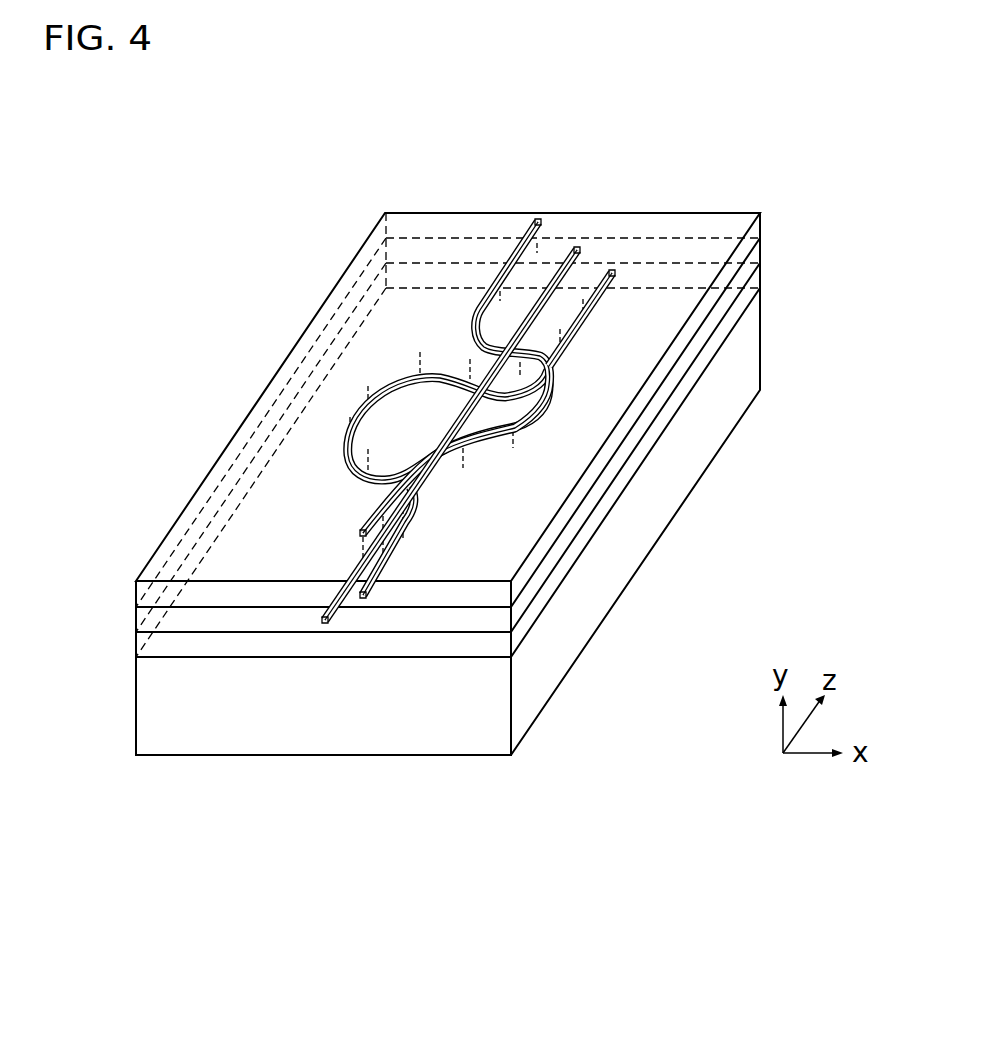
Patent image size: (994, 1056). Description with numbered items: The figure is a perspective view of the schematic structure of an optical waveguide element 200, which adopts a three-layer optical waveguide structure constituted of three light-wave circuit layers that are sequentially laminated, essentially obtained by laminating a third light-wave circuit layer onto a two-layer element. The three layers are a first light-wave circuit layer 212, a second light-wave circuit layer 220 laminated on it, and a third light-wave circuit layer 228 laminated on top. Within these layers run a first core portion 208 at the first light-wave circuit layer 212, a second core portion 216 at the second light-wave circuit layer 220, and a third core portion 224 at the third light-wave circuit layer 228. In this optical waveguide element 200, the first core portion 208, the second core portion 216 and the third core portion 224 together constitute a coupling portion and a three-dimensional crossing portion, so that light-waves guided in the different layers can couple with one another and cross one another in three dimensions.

The optical waveguide element 200 is at (467, 873).
The first core portion 208 is at (347, 457).
The first light-wave circuit layer 212 is at (601, 521).
The second core portion 216 is at (460, 418).
The second light-wave circuit layer 220 is at (628, 460).
The third core portion 224 is at (478, 315).
The third light-wave circuit layer 228 is at (642, 413).